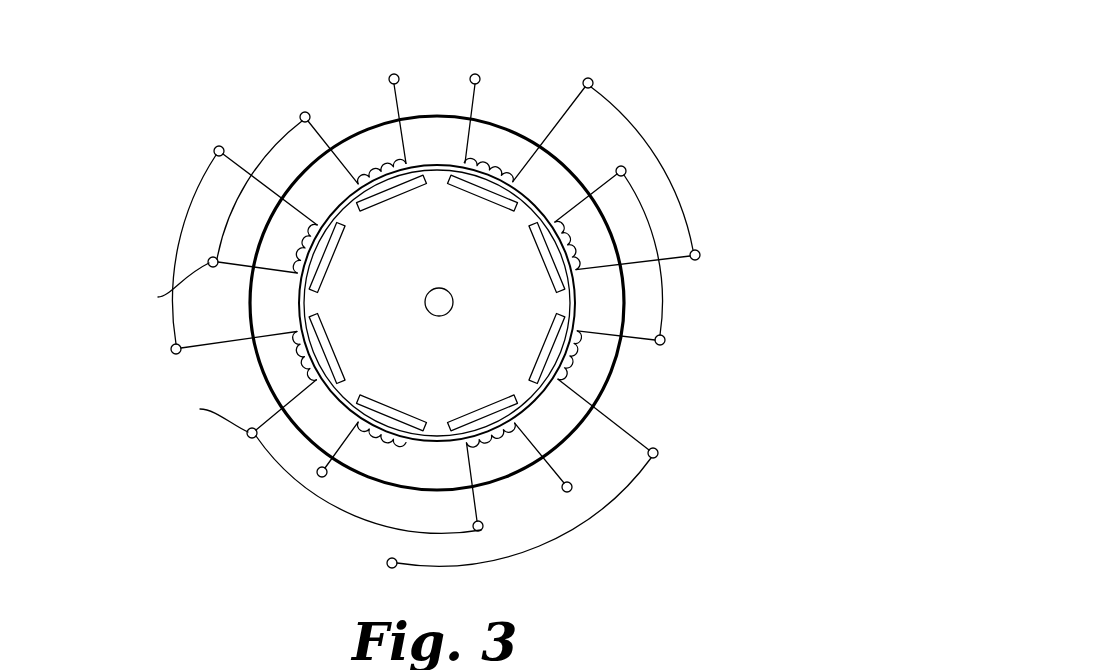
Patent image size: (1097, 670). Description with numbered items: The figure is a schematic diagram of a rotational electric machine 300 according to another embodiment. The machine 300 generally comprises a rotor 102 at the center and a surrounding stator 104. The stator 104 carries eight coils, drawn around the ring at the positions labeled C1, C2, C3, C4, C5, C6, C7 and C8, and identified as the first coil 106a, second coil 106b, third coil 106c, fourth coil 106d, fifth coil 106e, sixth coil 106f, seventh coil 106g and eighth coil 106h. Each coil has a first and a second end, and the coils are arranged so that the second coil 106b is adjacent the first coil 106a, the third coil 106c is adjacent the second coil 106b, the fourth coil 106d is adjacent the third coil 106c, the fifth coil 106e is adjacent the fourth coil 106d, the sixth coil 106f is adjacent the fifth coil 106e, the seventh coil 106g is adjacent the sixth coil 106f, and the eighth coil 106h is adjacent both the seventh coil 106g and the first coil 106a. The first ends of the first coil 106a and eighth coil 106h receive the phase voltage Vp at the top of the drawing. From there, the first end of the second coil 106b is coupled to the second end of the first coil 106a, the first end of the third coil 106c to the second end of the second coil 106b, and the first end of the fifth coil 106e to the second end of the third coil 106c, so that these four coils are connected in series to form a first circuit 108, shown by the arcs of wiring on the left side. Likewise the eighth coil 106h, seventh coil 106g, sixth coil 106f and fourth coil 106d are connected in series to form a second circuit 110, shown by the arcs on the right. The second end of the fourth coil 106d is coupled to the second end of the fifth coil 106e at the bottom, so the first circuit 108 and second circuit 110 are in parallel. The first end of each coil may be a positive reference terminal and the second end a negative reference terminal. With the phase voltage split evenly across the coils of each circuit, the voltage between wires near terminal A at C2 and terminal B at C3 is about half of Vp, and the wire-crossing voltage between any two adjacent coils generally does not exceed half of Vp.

The rotational electric machine 300 is at (646, 29).
The rotor 102 is at (384, 358).
The stator 104 is at (435, 115).
The first coil 106a is at (430, 154).
The second coil 106b is at (313, 222).
The third coil 106c is at (297, 331).
The fourth coil 106d is at (357, 420).
The fifth coil 106e is at (464, 442).
The sixth coil 106f is at (557, 382).
The seventh coil 106g is at (578, 272).
The eighth coil 106h is at (515, 186).
The first circuit 108 is at (185, 223).
The second circuit 110 is at (663, 161).
The coil C1 is at (382, 160).
The coil C2 is at (292, 248).
The coil C3 is at (292, 356).
The coil C4 is at (382, 446).
The coil C5 is at (492, 447).
The coil C6 is at (581, 355).
The coil C7 is at (578, 245).
The coil C8 is at (488, 158).